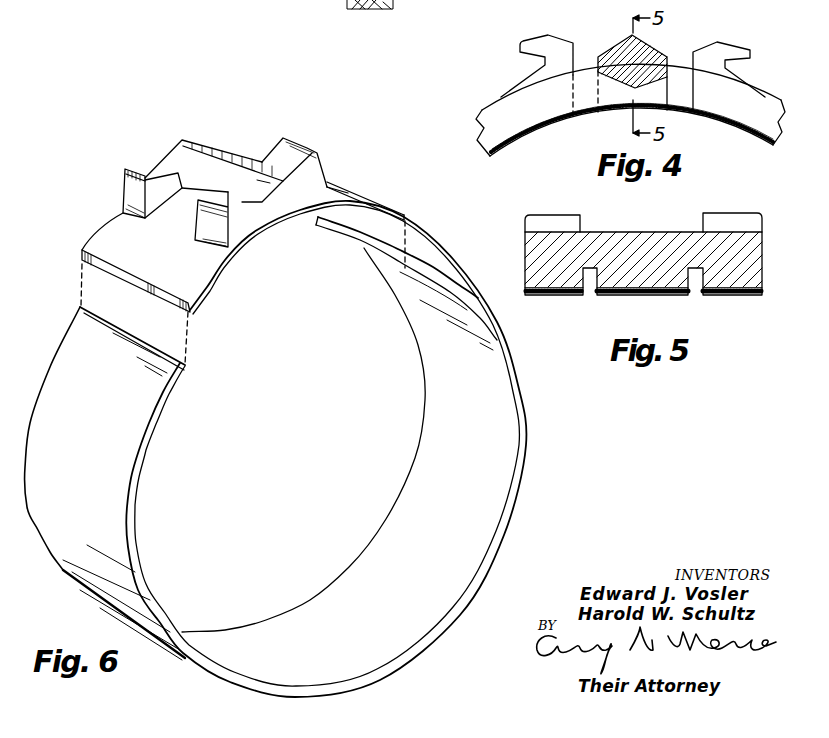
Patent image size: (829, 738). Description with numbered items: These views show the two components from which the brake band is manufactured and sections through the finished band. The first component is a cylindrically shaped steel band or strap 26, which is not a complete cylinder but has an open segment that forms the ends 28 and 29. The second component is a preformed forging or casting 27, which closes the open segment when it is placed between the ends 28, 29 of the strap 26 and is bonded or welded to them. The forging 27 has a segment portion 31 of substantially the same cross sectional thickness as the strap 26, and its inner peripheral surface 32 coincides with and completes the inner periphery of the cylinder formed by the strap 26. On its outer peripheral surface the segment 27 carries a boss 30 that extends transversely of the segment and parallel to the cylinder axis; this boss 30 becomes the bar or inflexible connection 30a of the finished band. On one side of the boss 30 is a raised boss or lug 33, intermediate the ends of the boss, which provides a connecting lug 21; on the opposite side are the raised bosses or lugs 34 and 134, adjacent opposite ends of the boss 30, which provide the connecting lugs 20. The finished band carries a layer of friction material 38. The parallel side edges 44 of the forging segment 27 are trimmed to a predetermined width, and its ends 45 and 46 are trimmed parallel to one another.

In FIG. 4, the connecting lugs 20 is at (519, 48).
In FIG. 5, the connecting lugs 20 is at (573, 223).
In FIG. 4, the connecting lug 21 is at (727, 49).
In FIG. 6, the band or strap 26 is at (70, 347).
In FIG. 4, the forging or casting 27 is at (482, 114).
In FIG. 6, the forging or casting 27 is at (193, 204).
In FIG. 6, the end of the strap 28 is at (385, 257).
In FIG. 6, the end of the strap 29 is at (187, 364).
In FIG. 6, the boss 30 is at (200, 152).
In FIG. 4, the bar or inflexible connection 30a is at (607, 55).
In FIG. 5, the bar or inflexible connection 30a is at (525, 268).
In FIG. 6, the segment portion 31 is at (348, 191).
In FIG. 6, the inner peripheral surface 32 is at (293, 218).
In FIG. 6, the raised boss or lug 33 is at (300, 153).
In FIG. 6, the raised boss or lug 34 is at (232, 207).
In FIG. 4, the friction material 38 is at (531, 134).
In FIG. 5, the friction material 38 is at (725, 295).
In FIG. 6, the side edges 44 is at (220, 263).
In FIG. 6, the end of the forging segment 45 is at (407, 218).
In FIG. 6, the end of the forging segment 46 is at (107, 268).
In FIG. 6, the raised boss or lug 134 is at (141, 170).